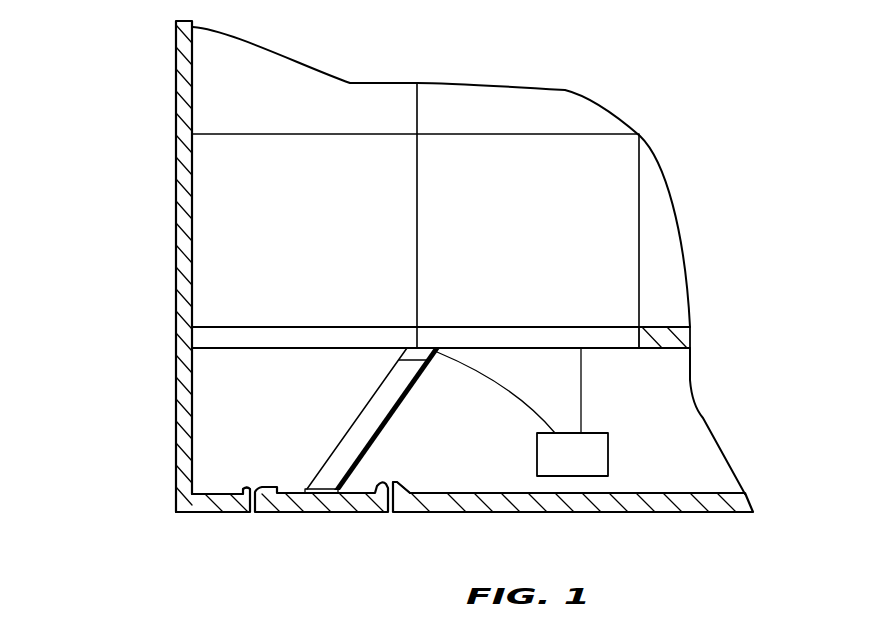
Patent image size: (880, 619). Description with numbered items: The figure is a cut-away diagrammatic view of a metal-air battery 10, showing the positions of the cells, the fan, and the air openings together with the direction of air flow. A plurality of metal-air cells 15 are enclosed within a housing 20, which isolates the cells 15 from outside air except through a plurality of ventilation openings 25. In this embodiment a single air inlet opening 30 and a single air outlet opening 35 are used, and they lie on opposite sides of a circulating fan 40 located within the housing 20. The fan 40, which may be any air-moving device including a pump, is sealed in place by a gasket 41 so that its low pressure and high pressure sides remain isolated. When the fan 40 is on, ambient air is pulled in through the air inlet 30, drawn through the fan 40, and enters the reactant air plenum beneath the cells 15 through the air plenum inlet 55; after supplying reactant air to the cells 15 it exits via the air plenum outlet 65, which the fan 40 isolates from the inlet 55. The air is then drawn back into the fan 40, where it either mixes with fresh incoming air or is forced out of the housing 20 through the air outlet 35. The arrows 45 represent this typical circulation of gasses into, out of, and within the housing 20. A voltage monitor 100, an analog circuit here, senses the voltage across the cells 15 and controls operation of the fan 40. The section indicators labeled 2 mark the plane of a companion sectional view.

The metal-air battery 10 is at (105, 118).
The housing 20 is at (170, 183).
The metal-air cells 15 is at (293, 242).
The air plenum inlet 55 is at (246, 338).
The air plenum outlet 65 is at (615, 348).
The voltage monitor 100 is at (588, 469).
The circulating fan 40 is at (405, 402).
The gasket 41 is at (322, 496).
The arrows 45 is at (316, 383).
The ventilation openings 25 is at (250, 538).
The air outlet opening 35 is at (248, 488).
The air inlet opening 30 is at (399, 486).
The section line 2- 2 is at (419, 60).